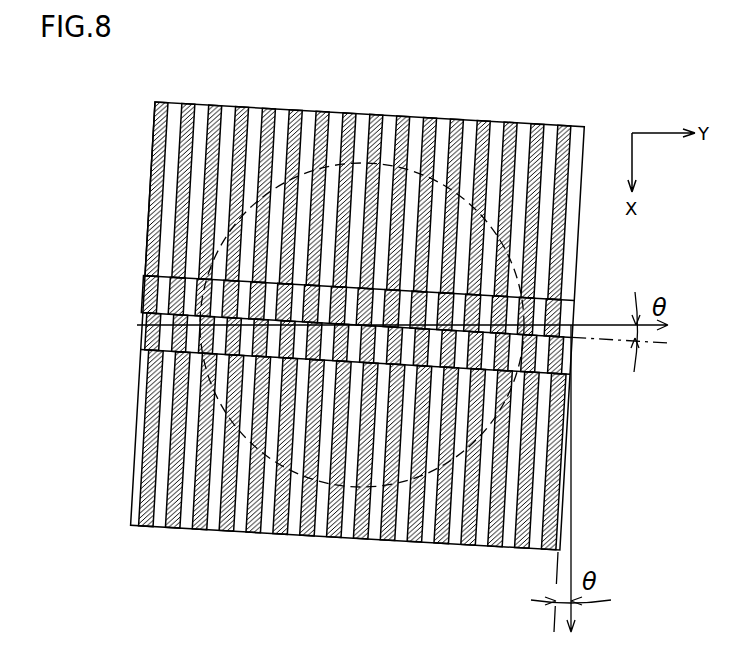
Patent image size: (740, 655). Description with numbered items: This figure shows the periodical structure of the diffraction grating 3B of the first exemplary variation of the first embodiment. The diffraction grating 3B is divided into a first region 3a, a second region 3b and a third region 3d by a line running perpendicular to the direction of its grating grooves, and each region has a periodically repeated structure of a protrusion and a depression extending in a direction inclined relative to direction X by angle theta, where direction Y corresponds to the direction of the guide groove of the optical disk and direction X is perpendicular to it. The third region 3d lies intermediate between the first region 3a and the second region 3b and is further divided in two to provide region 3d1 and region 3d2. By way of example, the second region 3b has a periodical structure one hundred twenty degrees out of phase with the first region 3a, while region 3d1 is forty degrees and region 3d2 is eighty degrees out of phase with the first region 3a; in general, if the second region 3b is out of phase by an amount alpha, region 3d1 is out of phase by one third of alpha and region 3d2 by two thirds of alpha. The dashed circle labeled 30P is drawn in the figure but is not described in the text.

The diffraction grating 3B is at (164, 75).
The first region 3a is at (335, 200).
The second region 3b is at (325, 448).
The third region 3d is at (300, 322).
The region 3d1 of third region 3d1 is at (320, 306).
The region 3d2 of third region 3d2 is at (322, 342).
The pixel region 30P is at (329, 485).